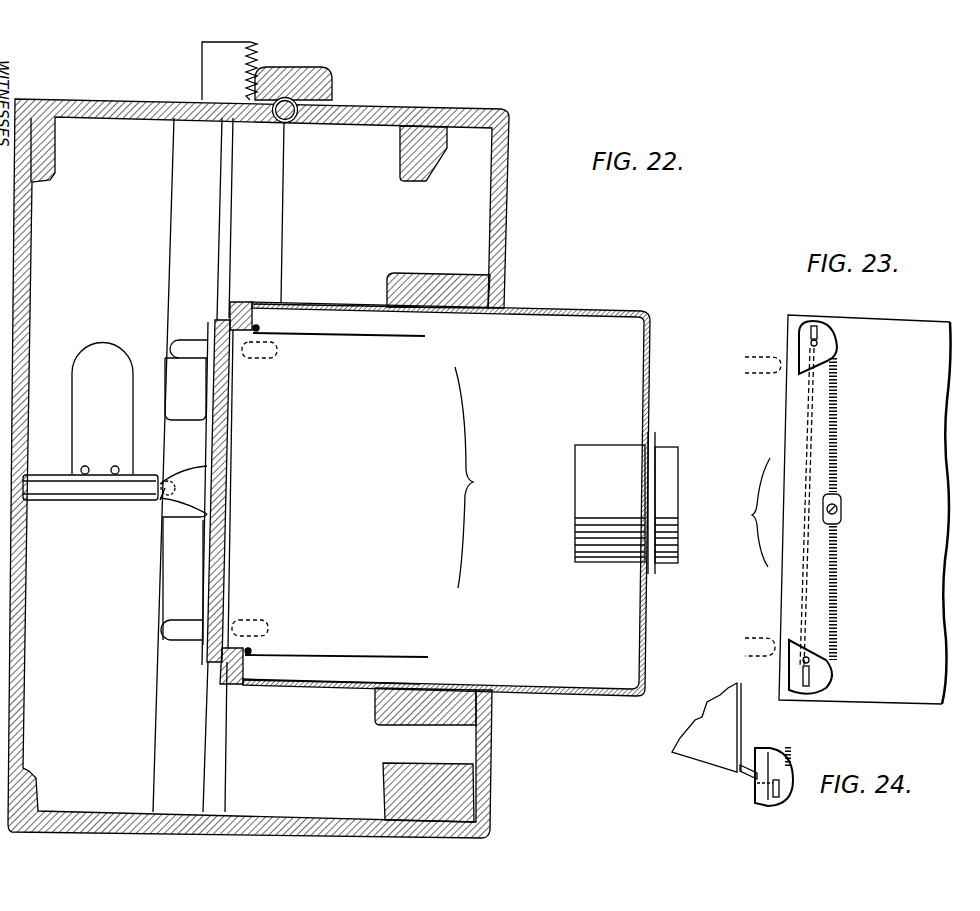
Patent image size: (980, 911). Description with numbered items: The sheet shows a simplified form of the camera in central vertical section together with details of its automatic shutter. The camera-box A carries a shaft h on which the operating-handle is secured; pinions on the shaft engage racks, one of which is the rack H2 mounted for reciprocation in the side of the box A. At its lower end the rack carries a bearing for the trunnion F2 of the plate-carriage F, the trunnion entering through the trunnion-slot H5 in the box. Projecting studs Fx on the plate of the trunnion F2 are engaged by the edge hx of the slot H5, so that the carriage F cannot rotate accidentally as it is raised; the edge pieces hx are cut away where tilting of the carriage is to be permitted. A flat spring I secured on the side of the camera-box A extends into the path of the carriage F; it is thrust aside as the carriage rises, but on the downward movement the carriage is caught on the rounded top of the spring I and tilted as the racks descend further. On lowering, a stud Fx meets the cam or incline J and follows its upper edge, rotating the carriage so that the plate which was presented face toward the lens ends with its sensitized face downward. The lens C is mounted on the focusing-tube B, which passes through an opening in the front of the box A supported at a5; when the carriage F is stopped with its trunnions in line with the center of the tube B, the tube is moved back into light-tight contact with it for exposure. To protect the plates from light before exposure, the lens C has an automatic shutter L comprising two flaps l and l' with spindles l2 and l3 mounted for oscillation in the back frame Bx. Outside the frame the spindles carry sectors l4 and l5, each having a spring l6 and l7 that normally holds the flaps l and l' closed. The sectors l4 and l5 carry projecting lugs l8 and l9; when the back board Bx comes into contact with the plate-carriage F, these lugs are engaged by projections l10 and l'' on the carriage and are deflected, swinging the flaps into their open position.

In FIG. 22, the camera-box A is at (272, 468).
In FIG. 22, the support for the focusing-tube a5 is at (445, 273).
In FIG. 22, the focusing-tube B is at (587, 311).
In FIG. 23, the focusing-tube B is at (865, 509).
In FIG. 22, the back frame Bx is at (238, 305).
In FIG. 22, the lens C is at (626, 503).
In FIG. 22, the plate-carriage F is at (213, 493).
In FIG. 22, the trunnion F2 is at (179, 487).
In FIG. 22, the projecting studs Fx is at (160, 503).
In FIG. 22, the rack H2 is at (253, 71).
In FIG. 22, the trunnion-slot H5 is at (208, 465).
In FIG. 22, the shaft h is at (291, 121).
In FIG. 22, the edge of the trunnion-slot hx is at (222, 268).
In FIG. 22, the flat spring I is at (90, 421).
In FIG. 22, the cam or incline J is at (183, 555).
In FIG. 22, the automatic shutter L is at (473, 477).
In FIG. 23, the automatic shutter L is at (751, 512).
In FIG. 22, the flap l is at (360, 349).
In FIG. 23, the flap l is at (802, 508).
In FIG. 22, the flap l' is at (331, 659).
In FIG. 23, the flap l' is at (798, 566).
In FIG. 24, the flap l' is at (699, 727).
In FIG. 22, the projection l'' is at (216, 488).
In FIG. 23, the projection l'' is at (759, 638).
In FIG. 22, the spindle l2 is at (262, 329).
In FIG. 22, the spindle l3 is at (250, 660).
In FIG. 24, the spindle l3 is at (747, 778).
In FIG. 22, the sector l4 is at (293, 303).
In FIG. 23, the sector l4 is at (829, 343).
In FIG. 22, the sector l5 is at (262, 684).
In FIG. 23, the sector l5 is at (813, 670).
In FIG. 24, the sector l5 is at (788, 797).
In FIG. 23, the spring l6 is at (839, 416).
In FIG. 23, the spring l7 is at (839, 595).
In FIG. 24, the spring l7 is at (793, 760).
In FIG. 22, the projecting lug l8 is at (287, 340).
In FIG. 23, the projecting lug l8 is at (802, 375).
In FIG. 22, the projecting lug l9 is at (268, 656).
In FIG. 23, the projecting lug l9 is at (801, 648).
In FIG. 24, the projecting lug l9 is at (765, 755).
In FIG. 22, the projection l10 is at (262, 360).
In FIG. 23, the projection l10 is at (767, 363).